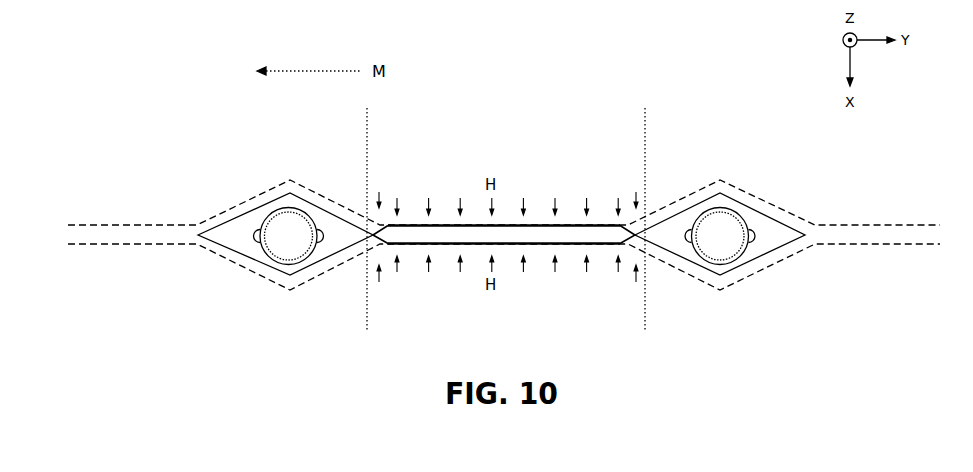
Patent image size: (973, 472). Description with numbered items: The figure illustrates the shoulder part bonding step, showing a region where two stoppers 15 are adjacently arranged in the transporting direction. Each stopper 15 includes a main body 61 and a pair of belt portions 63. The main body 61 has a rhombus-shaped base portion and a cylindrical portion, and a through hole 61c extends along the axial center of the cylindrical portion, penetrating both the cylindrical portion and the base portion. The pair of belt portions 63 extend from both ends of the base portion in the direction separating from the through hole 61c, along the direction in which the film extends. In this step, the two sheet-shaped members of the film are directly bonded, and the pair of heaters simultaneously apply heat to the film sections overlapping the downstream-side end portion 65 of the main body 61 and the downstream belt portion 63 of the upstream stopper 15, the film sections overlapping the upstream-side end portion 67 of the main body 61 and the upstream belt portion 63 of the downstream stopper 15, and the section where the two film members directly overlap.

The stopper 15 is at (249, 252).
The main body 61 is at (248, 214).
The through hole 61c is at (300, 222).
The belt portions 63 is at (198, 229).
The downstream-side end portion 65 is at (637, 223).
The upstream-side end portion 67 is at (382, 248).